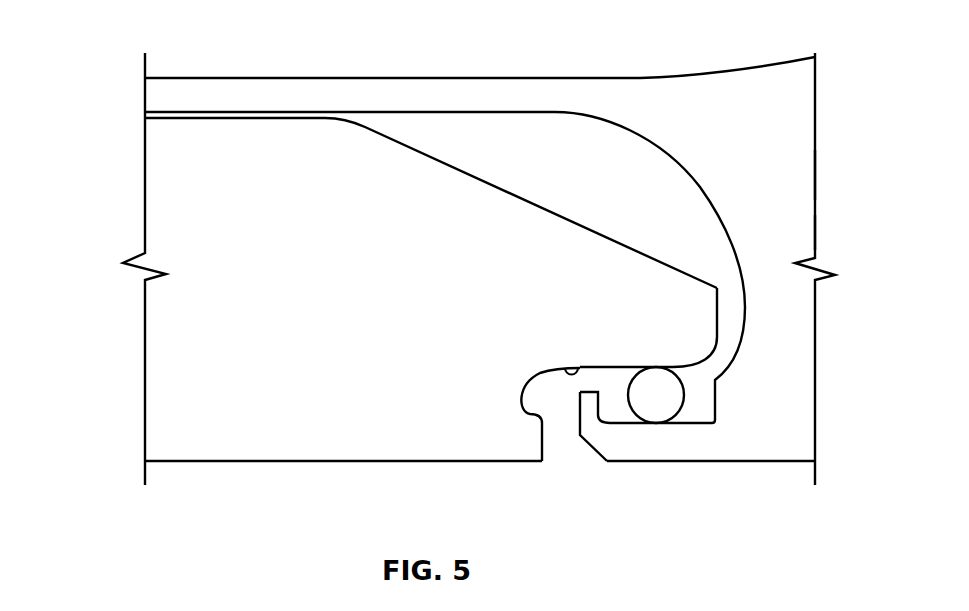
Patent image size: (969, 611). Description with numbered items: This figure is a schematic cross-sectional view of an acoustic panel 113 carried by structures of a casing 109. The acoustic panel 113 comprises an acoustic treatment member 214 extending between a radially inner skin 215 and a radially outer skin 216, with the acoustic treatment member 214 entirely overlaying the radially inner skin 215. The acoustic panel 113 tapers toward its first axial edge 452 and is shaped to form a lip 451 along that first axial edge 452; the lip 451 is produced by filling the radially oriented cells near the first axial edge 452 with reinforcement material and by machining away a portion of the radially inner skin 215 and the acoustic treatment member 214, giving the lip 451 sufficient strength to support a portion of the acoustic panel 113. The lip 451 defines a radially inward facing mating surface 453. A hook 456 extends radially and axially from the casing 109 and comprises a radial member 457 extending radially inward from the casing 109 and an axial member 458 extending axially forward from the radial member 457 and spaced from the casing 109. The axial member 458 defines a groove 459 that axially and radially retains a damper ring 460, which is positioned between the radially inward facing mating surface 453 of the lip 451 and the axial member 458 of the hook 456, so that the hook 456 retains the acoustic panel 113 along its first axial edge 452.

The acoustic panel 113 is at (91, 49).
The casing 109 is at (513, 82).
The radially outer skin 216 is at (188, 120).
The acoustic treatment member 214 is at (303, 306).
The radially inner skin 215 is at (180, 463).
The first axial edge 452 is at (718, 307).
The radially inward facing mating surface 453 is at (580, 367).
The lip 451 is at (563, 431).
The damper ring 460 is at (657, 410).
The groove 459 is at (684, 433).
The axial member 458 is at (750, 447).
The hook 456 is at (833, 168).
The radial member 457 is at (800, 233).